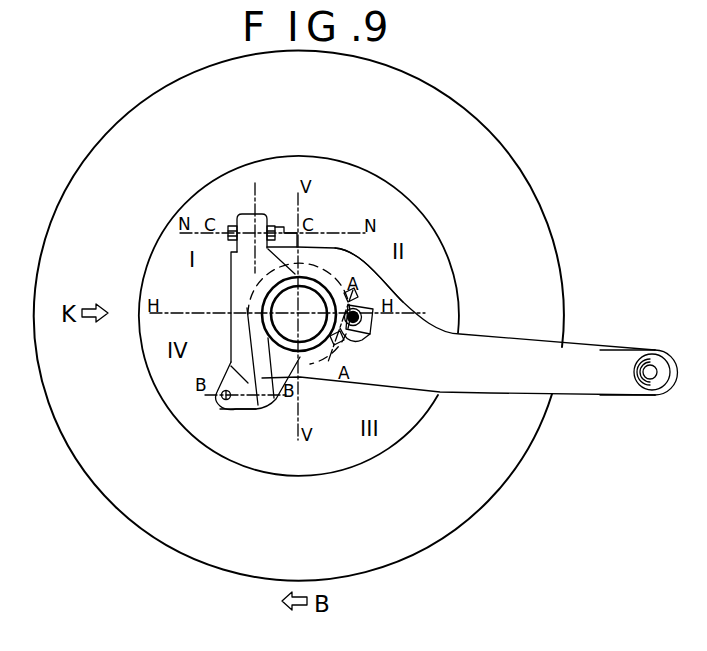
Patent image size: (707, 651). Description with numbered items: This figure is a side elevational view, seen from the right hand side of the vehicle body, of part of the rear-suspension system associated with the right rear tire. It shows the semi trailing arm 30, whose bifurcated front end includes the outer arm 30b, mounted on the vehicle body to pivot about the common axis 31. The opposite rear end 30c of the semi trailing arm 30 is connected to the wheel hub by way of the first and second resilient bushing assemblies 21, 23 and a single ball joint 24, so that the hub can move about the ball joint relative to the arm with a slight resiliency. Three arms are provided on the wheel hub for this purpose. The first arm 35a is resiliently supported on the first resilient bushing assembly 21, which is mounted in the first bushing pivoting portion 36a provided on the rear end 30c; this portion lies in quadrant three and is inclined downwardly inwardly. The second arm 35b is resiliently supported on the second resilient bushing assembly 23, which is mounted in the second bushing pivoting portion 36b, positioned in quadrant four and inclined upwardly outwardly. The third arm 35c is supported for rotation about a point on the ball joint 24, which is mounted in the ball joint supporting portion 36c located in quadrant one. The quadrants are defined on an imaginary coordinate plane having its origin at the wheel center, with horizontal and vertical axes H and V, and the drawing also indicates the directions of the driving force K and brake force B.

The first resilient bushing assembly 21 is at (374, 336).
The second resilient bushing assembly 23 is at (228, 416).
The ball joint 24 is at (266, 214).
The semi trailing arm 30 is at (475, 333).
The outer arm 30b is at (592, 360).
The rear end 30c is at (335, 263).
The common axis 31 is at (652, 366).
The first arm 35a is at (330, 358).
The second arm 35b is at (268, 390).
The third arm 35c is at (247, 262).
The first bushing pivoting portion 36a is at (372, 303).
The second bushing pivoting portion 36b is at (216, 398).
The ball joint supporting portion 36c is at (240, 217).